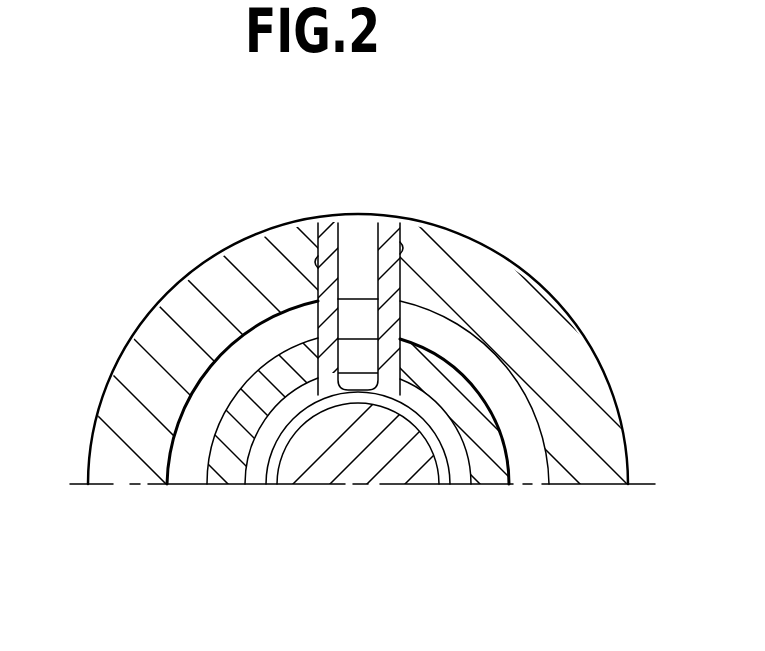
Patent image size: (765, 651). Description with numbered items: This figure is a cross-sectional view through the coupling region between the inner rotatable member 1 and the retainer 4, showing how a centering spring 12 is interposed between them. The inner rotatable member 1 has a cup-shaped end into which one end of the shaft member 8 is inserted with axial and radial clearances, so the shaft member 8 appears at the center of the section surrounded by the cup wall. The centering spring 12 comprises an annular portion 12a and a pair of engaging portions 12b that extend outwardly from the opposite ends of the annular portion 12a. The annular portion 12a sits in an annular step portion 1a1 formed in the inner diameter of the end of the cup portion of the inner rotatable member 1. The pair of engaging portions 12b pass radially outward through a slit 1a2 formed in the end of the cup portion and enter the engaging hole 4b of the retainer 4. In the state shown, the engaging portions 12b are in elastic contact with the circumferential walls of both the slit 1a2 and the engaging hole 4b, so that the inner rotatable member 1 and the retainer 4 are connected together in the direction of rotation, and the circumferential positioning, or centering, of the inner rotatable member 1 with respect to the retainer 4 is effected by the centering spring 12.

The inner rotatable member 1 is at (144, 318).
The retainer 4 is at (189, 300).
The annular step portion 1a1 is at (265, 455).
The slit 1a2 is at (336, 343).
The engaging hole 4b is at (322, 238).
The centering spring 12 is at (431, 394).
The annular portion 12a is at (427, 440).
The engaging portions 12b is at (318, 263).
The shaft member 8 is at (335, 465).